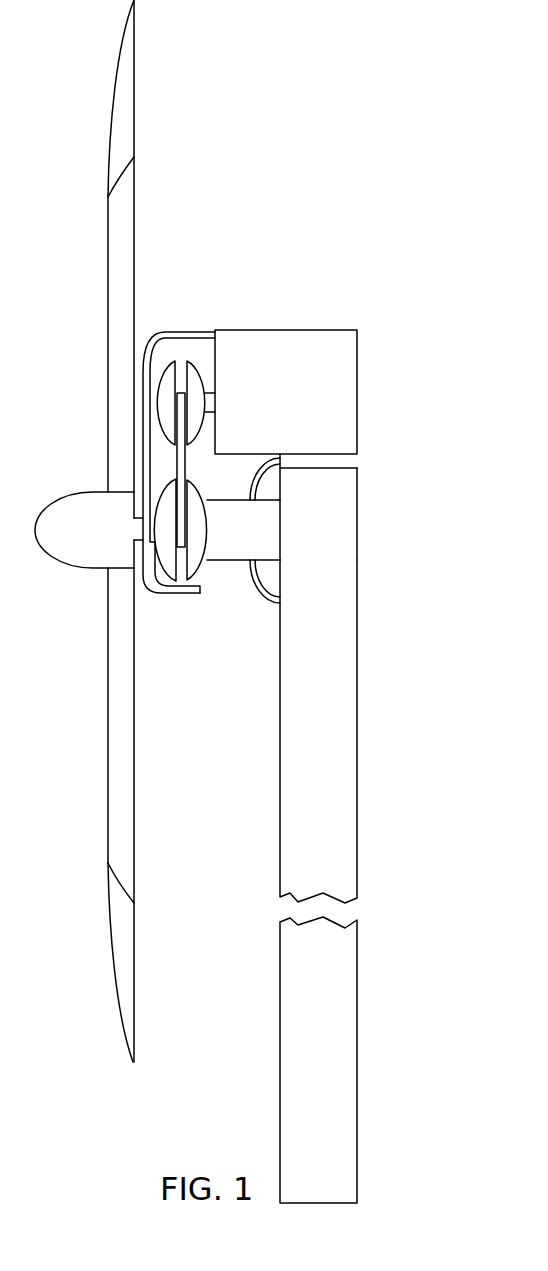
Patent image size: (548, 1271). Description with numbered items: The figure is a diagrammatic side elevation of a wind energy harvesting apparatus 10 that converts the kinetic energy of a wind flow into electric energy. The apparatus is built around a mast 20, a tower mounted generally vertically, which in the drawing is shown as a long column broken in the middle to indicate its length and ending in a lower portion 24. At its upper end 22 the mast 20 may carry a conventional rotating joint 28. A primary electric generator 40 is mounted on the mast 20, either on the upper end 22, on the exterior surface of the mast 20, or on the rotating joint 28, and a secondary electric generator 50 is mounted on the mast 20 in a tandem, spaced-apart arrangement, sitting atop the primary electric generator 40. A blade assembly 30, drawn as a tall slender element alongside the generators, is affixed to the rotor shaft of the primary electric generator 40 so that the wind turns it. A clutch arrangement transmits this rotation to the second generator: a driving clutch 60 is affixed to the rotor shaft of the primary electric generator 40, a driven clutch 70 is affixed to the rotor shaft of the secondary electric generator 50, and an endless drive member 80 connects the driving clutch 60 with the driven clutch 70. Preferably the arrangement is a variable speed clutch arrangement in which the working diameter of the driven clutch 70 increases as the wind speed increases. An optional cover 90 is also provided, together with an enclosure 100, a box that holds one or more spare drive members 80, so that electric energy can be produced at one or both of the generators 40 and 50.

The wind energy harvesting apparatus 10 is at (326, 707).
The mast 20 is at (350, 753).
The upper end 22 is at (357, 479).
The lower column portion 24 is at (357, 1180).
The rotating joint 28 is at (357, 460).
The blade assembly 30 is at (112, 270).
The primary electric generator 40 is at (222, 563).
The secondary electric generator 50 is at (349, 362).
The driving clutch 60 is at (158, 572).
The driven clutch 70 is at (157, 405).
The drive member 80 is at (175, 468).
The cover 90 is at (168, 597).
The enclosure 100 is at (273, 572).